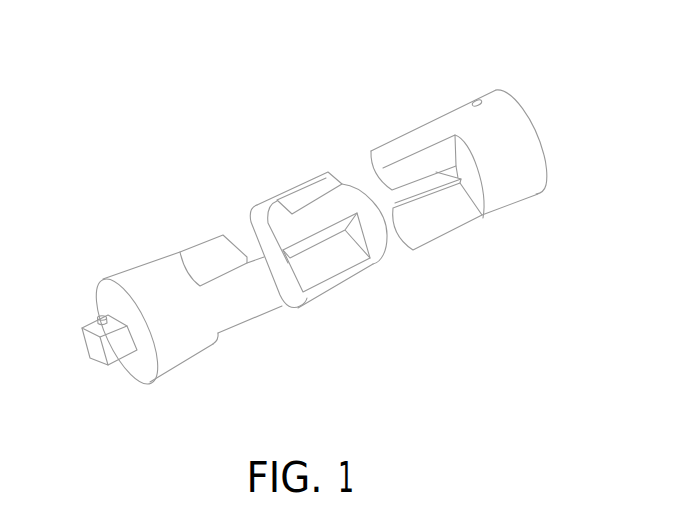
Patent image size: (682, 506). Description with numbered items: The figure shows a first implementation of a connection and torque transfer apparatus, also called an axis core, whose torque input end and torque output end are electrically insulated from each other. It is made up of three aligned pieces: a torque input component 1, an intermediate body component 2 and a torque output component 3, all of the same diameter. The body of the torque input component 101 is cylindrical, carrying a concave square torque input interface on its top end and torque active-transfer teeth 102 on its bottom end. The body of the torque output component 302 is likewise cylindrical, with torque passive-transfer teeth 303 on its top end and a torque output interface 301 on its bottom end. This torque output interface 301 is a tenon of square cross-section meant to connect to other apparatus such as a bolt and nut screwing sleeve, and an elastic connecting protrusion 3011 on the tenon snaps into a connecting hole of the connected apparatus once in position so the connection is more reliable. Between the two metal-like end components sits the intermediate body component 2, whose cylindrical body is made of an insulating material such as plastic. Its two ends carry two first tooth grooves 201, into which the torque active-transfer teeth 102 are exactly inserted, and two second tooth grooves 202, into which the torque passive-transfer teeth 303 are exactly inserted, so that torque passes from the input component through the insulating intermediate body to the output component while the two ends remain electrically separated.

The torque input component 1 is at (428, 104).
The body of the torque input component 101 is at (528, 192).
The torque active-transfer teeth 102 is at (400, 142).
The intermediate body component 2 is at (292, 170).
The first tooth grooves 201 is at (327, 180).
The second tooth grooves 202 is at (255, 241).
The torque output component 3 is at (126, 246).
The torque output interface 301 is at (108, 348).
The elastic connecting protrusion 3011 is at (97, 317).
The body of the torque output component 302 is at (186, 353).
The torque passive-transfer teeth 303 is at (198, 257).